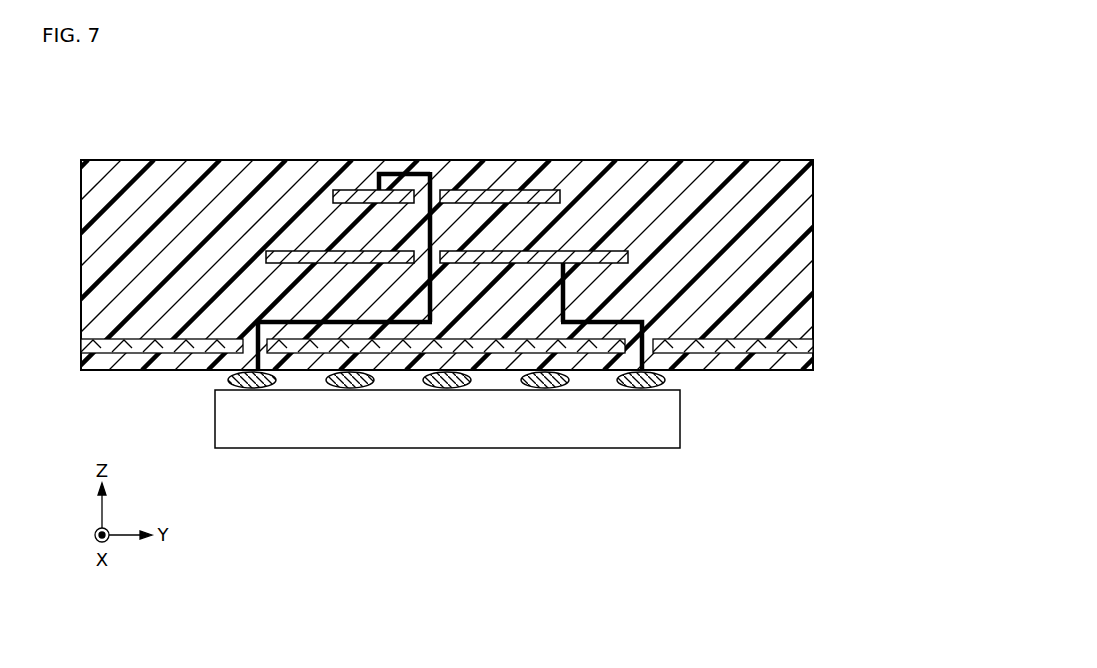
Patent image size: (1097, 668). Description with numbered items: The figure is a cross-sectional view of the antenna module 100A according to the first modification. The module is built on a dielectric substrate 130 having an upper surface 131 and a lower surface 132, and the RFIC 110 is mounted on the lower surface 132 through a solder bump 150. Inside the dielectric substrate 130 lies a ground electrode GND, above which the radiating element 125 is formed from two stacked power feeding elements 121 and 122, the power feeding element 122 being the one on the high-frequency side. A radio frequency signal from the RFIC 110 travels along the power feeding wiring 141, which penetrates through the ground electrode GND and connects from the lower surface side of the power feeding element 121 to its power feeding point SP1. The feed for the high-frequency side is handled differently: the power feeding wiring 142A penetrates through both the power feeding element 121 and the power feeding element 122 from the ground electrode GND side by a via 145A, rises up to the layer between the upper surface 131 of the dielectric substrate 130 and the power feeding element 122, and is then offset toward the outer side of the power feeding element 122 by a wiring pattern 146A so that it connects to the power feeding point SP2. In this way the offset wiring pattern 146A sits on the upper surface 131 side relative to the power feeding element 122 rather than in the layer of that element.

The antenna module 100A is at (506, 276).
The RFIC 110 is at (680, 415).
The power feeding element 121 is at (528, 251).
The power feeding element 122 is at (483, 190).
The radiating element 125 is at (534, 172).
The dielectric substrate 130 is at (813, 222).
The upper surface 131 is at (760, 159).
The lower surface 132 is at (763, 372).
The power feeding wiring 141 is at (645, 332).
The power feeding wiring 142A is at (310, 323).
The via 145A is at (433, 283).
The wiring pattern 146A is at (428, 173).
The solder bump 150 is at (233, 382).
The ground electrode GND is at (802, 348).
The power feeding point SP1 is at (563, 262).
The power feeding point SP2 is at (382, 191).